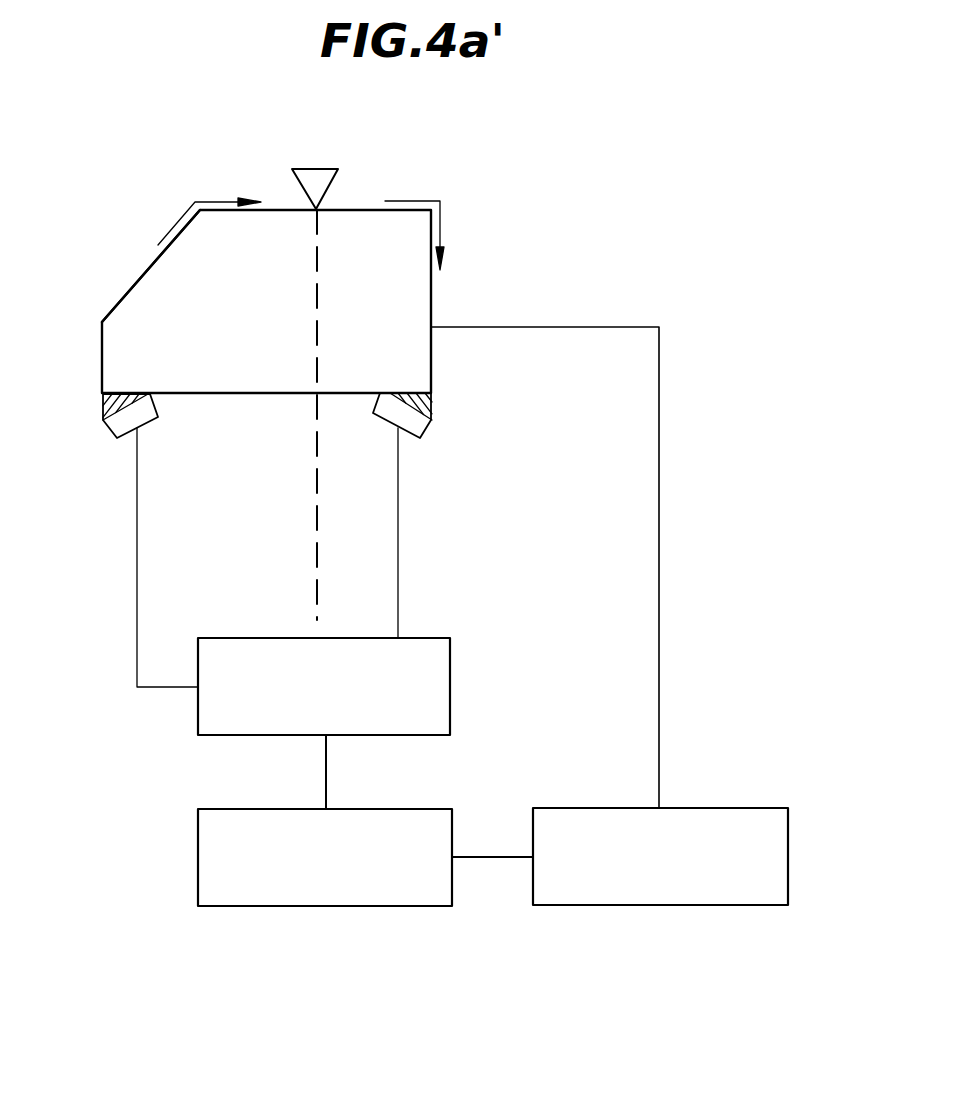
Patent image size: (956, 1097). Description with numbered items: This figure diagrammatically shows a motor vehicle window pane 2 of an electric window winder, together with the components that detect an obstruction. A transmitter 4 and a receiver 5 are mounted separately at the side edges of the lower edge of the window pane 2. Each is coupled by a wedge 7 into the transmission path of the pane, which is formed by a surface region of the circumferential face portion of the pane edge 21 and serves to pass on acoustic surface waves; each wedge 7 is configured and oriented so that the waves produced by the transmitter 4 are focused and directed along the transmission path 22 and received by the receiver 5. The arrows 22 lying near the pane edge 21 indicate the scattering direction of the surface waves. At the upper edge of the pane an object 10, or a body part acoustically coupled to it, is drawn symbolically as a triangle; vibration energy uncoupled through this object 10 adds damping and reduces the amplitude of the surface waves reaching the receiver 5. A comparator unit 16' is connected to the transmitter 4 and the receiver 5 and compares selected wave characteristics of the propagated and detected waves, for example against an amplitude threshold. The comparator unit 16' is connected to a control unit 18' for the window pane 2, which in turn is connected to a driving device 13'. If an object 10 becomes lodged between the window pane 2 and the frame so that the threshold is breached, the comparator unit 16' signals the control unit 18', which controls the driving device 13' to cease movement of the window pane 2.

The window pane 2 is at (165, 333).
The window pane edge 21 is at (137, 282).
The arrows indicating scattering direction 22 is at (181, 219).
The object 10 is at (303, 178).
The wedge 7 is at (102, 400).
The transmitter 4 is at (146, 415).
The receiver 5 is at (425, 432).
The comparator unit 16' is at (375, 660).
The control unit 18' is at (376, 820).
The driving device 13' is at (661, 616).